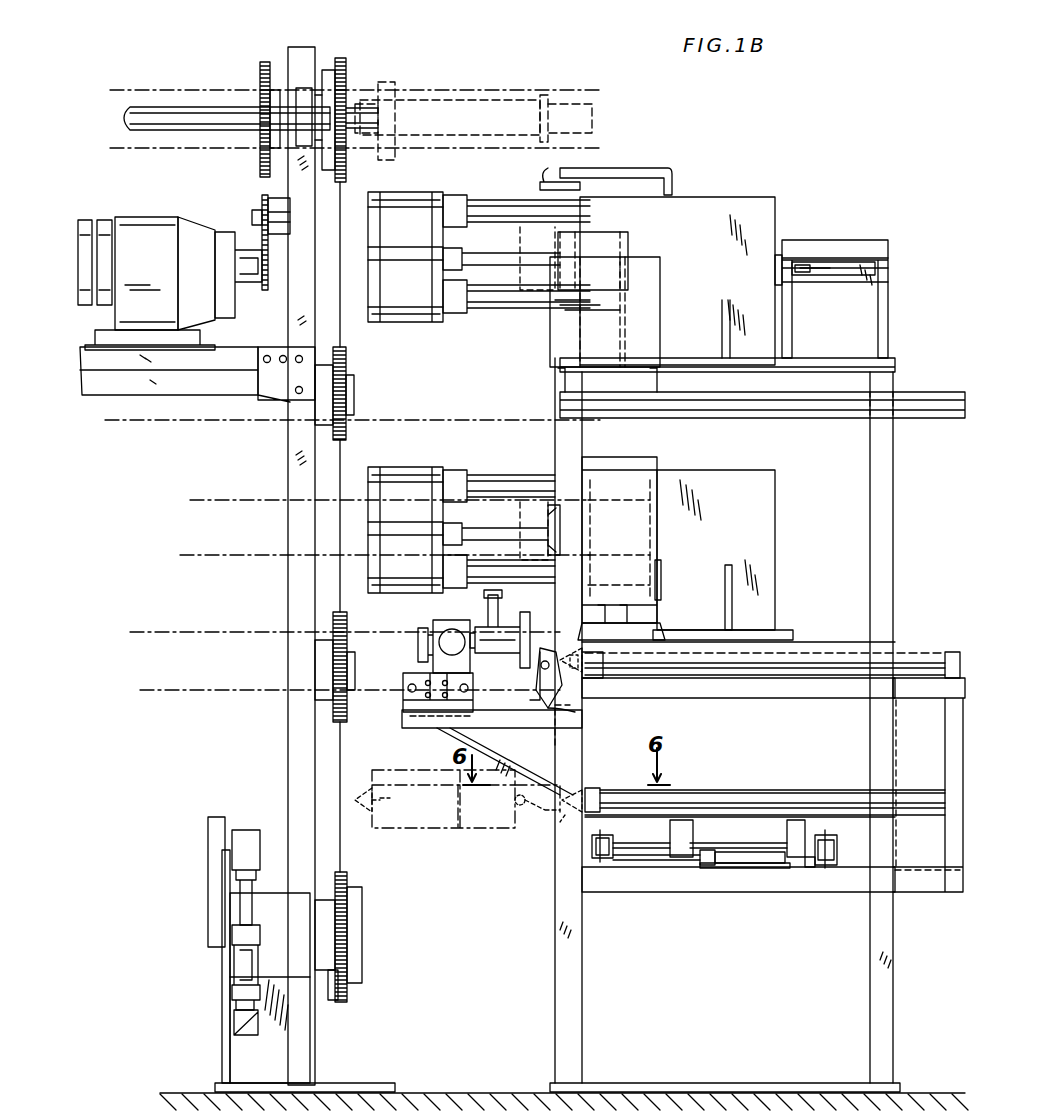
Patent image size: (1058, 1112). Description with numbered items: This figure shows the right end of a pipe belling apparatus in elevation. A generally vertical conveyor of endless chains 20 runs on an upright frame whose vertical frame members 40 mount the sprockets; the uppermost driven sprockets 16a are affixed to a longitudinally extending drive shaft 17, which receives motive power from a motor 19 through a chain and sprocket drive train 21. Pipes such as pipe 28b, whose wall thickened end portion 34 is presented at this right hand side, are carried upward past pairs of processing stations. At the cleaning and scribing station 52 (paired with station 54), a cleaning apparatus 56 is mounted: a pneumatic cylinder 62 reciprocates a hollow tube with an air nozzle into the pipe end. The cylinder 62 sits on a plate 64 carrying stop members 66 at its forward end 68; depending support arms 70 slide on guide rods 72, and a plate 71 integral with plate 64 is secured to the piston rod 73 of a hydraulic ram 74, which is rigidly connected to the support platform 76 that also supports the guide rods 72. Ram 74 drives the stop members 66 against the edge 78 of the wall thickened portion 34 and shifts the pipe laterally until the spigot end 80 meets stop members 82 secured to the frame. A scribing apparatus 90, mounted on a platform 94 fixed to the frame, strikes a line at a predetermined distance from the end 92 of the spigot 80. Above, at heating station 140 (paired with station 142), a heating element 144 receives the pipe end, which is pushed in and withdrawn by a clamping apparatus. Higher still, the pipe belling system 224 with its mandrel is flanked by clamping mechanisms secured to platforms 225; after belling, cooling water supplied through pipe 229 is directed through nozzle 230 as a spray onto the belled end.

The drive shaft 17 is at (178, 107).
The driven sprockets 16a is at (348, 60).
The chain and sprocket drive train 21 is at (260, 186).
The motor 19 is at (155, 226).
The endless chains 20 is at (340, 466).
The frame members 40 is at (300, 556).
The pipe 229 is at (596, 168).
The nozzle 230 is at (564, 164).
The pipe belling system 224 is at (736, 190).
The platform 225 is at (600, 236).
The heating station 142 is at (914, 364).
The heating element 144 is at (642, 462).
The heating station 140 is at (794, 498).
The scribing apparatus 90 is at (433, 616).
The spigot end 80 is at (530, 640).
The stop members 82 is at (540, 680).
The end 92 is at (575, 712).
The platform 94 is at (528, 735).
The cleaning and scribing station 54 is at (947, 644).
The cleaning apparatus 56 is at (763, 782).
The pneumatic cylinder 62 is at (800, 792).
The plate 64 is at (847, 815).
The stop members 66 is at (560, 818).
The forward end 68 is at (596, 820).
The support arms 70 is at (787, 830).
The plate 71 is at (705, 866).
The guide rods 72 is at (655, 858).
The piston rod 73 is at (712, 870).
The hydraulic ram 74 is at (768, 862).
The support platform 76 is at (820, 870).
The edge 78 is at (515, 832).
The wall thickened end portion 34 is at (460, 832).
The pipe 28b is at (378, 832).
The cleaning and scribing station 52 is at (951, 916).